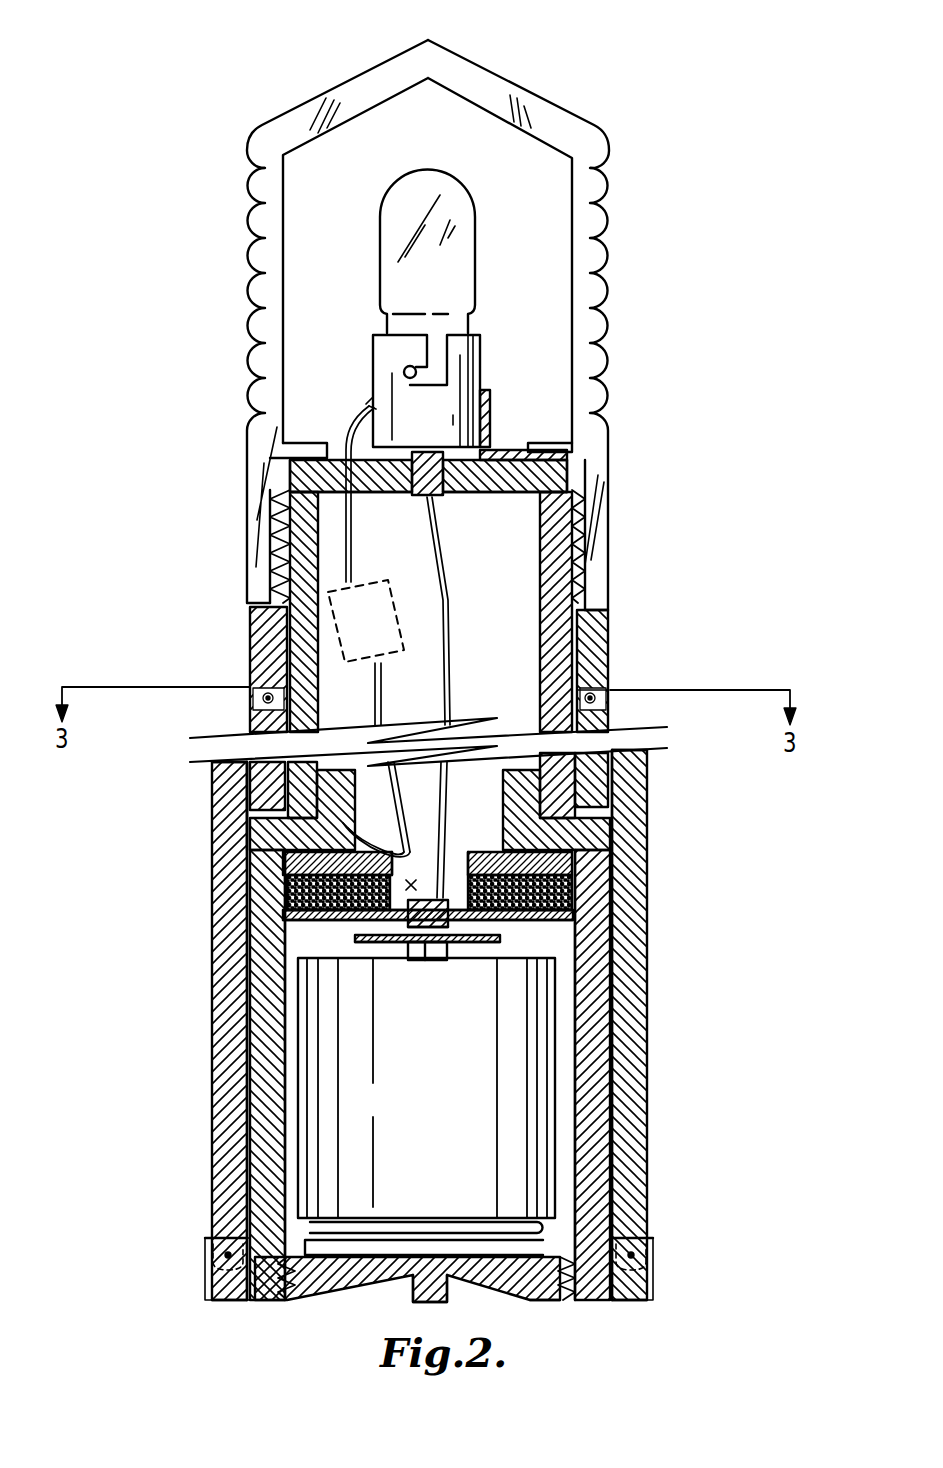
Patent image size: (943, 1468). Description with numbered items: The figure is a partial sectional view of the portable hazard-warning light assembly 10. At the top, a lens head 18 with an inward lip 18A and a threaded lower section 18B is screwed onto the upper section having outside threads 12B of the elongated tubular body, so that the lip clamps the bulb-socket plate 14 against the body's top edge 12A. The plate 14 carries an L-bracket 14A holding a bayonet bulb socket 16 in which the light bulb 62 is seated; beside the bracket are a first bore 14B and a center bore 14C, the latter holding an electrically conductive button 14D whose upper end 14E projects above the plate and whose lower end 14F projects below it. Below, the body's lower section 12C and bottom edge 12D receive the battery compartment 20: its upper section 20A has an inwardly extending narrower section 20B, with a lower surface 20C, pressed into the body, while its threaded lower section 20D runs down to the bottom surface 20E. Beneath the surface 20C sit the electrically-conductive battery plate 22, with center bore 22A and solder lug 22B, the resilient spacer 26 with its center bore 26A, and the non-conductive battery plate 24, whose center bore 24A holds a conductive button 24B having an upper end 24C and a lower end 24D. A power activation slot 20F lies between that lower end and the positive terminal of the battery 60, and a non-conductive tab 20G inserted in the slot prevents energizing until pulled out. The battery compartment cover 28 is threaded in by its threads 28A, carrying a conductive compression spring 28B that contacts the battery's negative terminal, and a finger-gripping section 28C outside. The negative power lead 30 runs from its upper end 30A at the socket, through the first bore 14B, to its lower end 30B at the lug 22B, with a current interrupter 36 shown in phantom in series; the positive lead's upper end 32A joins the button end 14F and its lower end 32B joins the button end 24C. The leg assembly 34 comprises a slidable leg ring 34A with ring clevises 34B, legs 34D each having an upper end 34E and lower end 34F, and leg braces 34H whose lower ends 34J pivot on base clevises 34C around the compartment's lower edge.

The portable hazard-warning light assembly 10 is at (178, 76).
The top edge 12A is at (560, 462).
The upper section having outside threads 12B is at (553, 555).
The lower section 12C is at (578, 786).
The bottom edge 12D is at (535, 835).
The bulb-socket plate 14 is at (288, 470).
The L-bracket 14A is at (490, 403).
The first bore 14B is at (300, 483).
The center bore 14C is at (443, 497).
The electrically conductive button 14D is at (305, 520).
The upper end 14E is at (283, 440).
The lower end 14F is at (275, 553).
The bulb socket 16 is at (392, 350).
The lens head 18 is at (598, 183).
The inward lip 18A is at (548, 452).
The lower section 18B is at (595, 598).
The battery compartment 20 is at (265, 1122).
The upper section 20A is at (568, 888).
The inwardly extending narrower section 20B is at (617, 898).
The lower surface 20C is at (565, 915).
The lower section 20D is at (575, 1265).
The bottom surface 20E is at (540, 1302).
The power activation slot 20F is at (248, 1033).
The non-conductive tab 20G is at (250, 1010).
The electrically-conductive battery plate 22 is at (296, 866).
The center bore 22A is at (500, 875).
The solder lug 22B is at (288, 848).
The non-conductive battery plate 24 is at (452, 918).
The center bore 24A is at (455, 945).
The electrically conductive button 24B is at (356, 940).
The upper end 24C is at (315, 960).
The lower end 24D is at (410, 950).
The resilient spacer 26 is at (548, 925).
The center bore 26A is at (300, 913).
The battery compartment cover 28 is at (317, 1272).
The threads 28A is at (560, 1295).
The conductive compression spring 28B is at (548, 1228).
The finger-gripping section 28C is at (395, 1295).
The negative power lead 30 is at (350, 425).
The upper end 30A is at (366, 404).
The lower end 30B is at (395, 838).
The upper end 32A is at (438, 582).
The lower end 32B is at (450, 905).
The leg assembly 34 is at (429, 1025).
The slidable leg ring 34A is at (577, 635).
The ring clevises 34B is at (585, 702).
The base clevises 34C is at (207, 1264).
The legs 34D is at (250, 722).
The upper end 34E is at (201, 774).
The lower end 34F is at (212, 768).
The leg brace 34H is at (220, 1085).
The lower end 34J is at (213, 1236).
The current interrupter 36 is at (333, 618).
The battery 60 is at (327, 1055).
The light bulb 62 is at (447, 272).